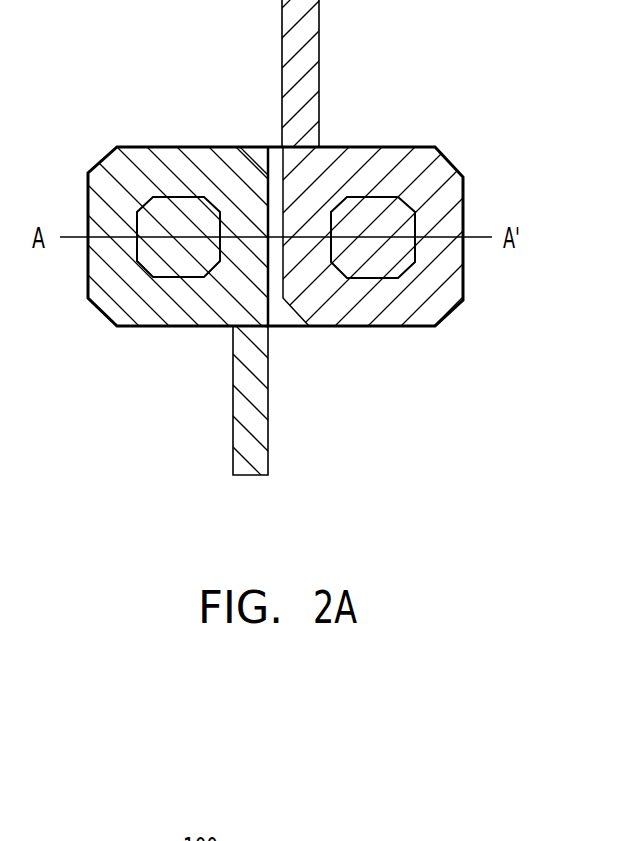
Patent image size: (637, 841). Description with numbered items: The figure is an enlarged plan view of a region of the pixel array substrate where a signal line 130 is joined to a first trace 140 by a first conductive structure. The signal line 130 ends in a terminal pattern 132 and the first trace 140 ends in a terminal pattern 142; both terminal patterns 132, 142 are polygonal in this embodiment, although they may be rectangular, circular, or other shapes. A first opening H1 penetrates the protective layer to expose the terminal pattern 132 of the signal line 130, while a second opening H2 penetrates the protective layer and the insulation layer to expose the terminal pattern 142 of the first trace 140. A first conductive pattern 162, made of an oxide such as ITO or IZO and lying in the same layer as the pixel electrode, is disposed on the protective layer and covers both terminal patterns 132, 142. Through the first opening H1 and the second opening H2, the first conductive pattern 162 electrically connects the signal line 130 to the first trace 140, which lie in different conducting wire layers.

The signal line 130 is at (245, 430).
The terminal pattern 132 is at (153, 305).
The first trace 140 is at (302, 37).
The terminal pattern 142 is at (413, 172).
The first conductive pattern 162 is at (272, 157).
The first opening H1 is at (183, 212).
The second opening H2 is at (385, 213).